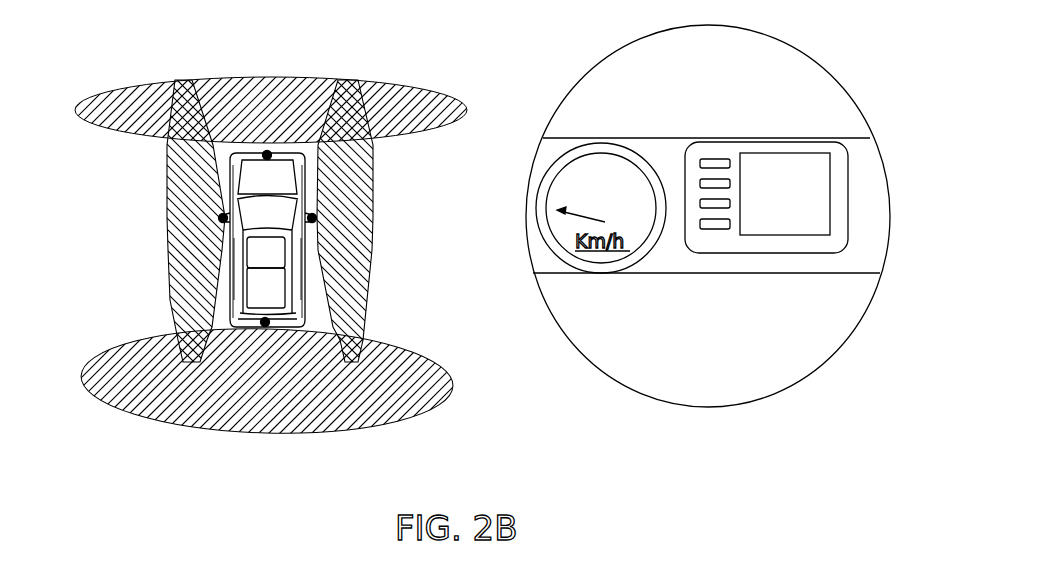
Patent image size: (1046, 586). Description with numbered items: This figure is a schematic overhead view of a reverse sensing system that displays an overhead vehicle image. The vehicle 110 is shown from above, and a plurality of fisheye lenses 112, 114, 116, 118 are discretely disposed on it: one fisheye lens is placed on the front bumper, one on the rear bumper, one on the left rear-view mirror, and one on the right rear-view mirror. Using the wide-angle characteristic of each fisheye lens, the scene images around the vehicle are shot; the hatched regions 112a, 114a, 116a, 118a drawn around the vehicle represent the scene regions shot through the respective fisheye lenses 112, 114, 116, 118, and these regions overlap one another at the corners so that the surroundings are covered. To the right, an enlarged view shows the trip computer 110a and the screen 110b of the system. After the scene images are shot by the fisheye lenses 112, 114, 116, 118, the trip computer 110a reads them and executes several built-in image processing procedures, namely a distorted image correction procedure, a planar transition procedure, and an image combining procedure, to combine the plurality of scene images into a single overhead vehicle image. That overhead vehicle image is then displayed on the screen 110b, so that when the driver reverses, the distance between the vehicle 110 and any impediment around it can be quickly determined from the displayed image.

The vehicle 110 is at (270, 182).
The trip computer 110a is at (270, 213).
The screen 110b is at (809, 221).
The fisheye lens 112 is at (268, 152).
The region 112a is at (413, 82).
The fisheye lens 114 is at (223, 218).
The region 114a is at (168, 190).
The fisheye lens 116 is at (265, 322).
The region 116a is at (420, 373).
The fisheye lens 118 is at (318, 216).
The region 118a is at (373, 262).